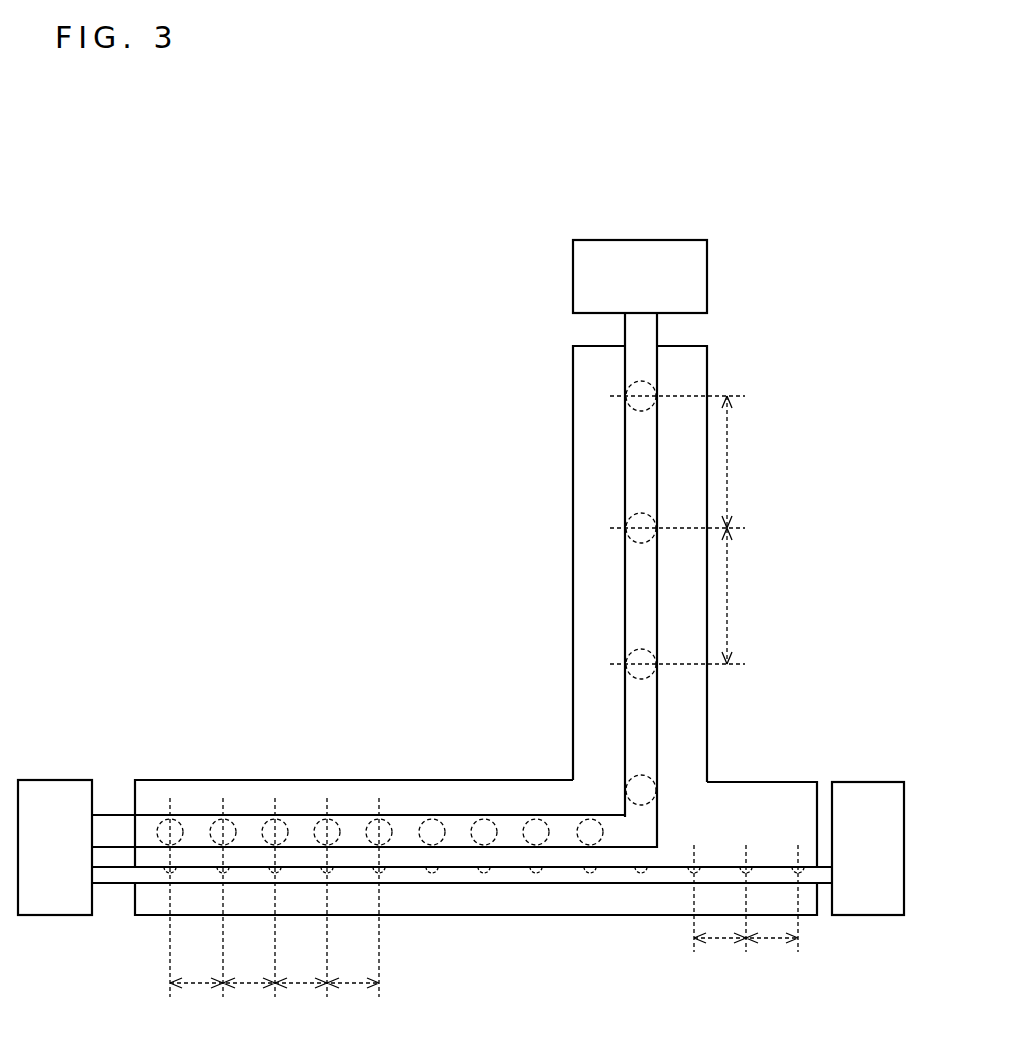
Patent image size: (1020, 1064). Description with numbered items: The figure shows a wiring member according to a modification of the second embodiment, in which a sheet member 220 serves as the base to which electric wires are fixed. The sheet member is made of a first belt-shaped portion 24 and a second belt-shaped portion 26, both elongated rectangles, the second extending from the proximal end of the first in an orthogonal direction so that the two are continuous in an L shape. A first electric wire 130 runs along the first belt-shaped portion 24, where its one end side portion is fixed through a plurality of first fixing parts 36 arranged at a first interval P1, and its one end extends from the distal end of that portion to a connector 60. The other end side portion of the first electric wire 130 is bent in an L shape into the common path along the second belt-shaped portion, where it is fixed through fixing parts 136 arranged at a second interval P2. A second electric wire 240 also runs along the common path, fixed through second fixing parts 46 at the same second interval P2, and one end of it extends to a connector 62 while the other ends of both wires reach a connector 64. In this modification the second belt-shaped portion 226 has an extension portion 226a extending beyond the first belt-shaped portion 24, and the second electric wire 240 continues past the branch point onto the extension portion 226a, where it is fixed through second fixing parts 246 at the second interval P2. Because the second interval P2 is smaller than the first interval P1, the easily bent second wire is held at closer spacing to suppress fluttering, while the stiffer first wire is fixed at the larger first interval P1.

The connector 60 is at (707, 272).
The first belt-shaped portion 24 is at (707, 346).
The first electric wire 130 is at (657, 697).
The first fixing part 36 is at (625, 492).
The first interval P1 is at (762, 597).
The sheet member 220 is at (417, 553).
The connector 62 is at (58, 780).
The connector 64 is at (870, 782).
The second belt-shaped portion 26 is at (145, 780).
The fixing part 136 is at (250, 832).
The extension portion 226a is at (745, 782).
The second electric wire 240 is at (605, 883).
The second belt-shaped portion 226 is at (515, 915).
The second fixing part 46 is at (206, 885).
The second fixing part 246 is at (772, 866).
The second interval P2 is at (770, 960).